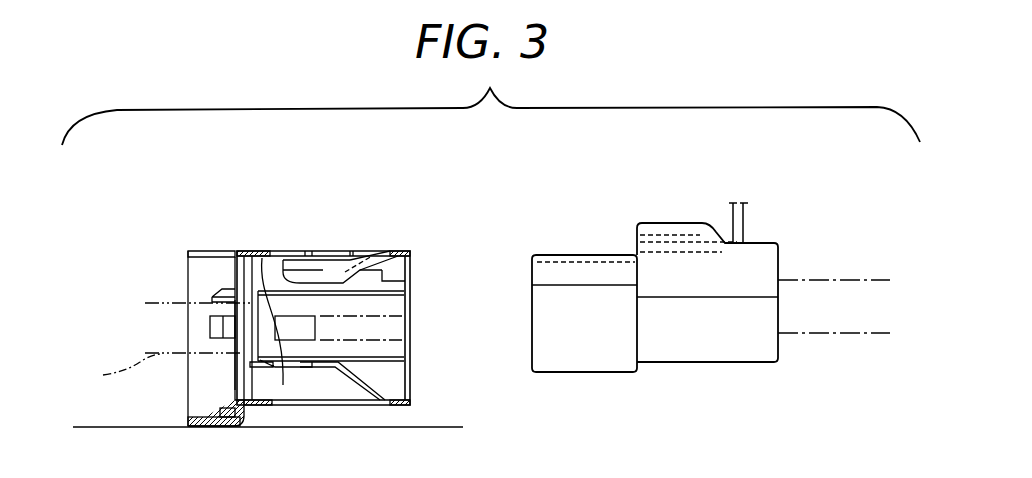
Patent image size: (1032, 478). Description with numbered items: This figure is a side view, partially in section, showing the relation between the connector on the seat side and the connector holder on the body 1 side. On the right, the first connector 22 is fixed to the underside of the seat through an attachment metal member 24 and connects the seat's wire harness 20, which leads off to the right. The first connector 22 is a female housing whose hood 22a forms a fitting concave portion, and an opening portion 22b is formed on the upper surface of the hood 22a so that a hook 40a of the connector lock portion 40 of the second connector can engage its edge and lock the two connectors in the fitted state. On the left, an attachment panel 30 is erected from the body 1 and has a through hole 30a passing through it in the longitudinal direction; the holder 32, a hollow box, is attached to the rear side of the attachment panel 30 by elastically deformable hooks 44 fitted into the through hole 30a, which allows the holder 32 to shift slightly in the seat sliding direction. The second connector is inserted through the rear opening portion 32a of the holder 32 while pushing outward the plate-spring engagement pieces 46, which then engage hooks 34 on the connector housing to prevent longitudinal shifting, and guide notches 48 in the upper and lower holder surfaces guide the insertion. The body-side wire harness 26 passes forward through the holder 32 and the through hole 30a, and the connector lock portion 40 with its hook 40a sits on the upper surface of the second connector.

The body 1 is at (440, 424).
The wire harness 20 is at (853, 337).
The first connector 22 is at (714, 338).
The hood 22a is at (578, 358).
The opening portion 22b is at (594, 262).
The attachment metal member 24 is at (748, 222).
The wire harness 26 is at (126, 379).
The attachment panel 30 is at (203, 257).
The through hole 30a is at (233, 385).
The holder 32 is at (405, 242).
The opening portion 32a is at (412, 265).
The hooks 34 is at (264, 252).
The connector lock portion 40 is at (320, 256).
The hook 40a is at (352, 256).
The hooks 44 is at (232, 368).
The engagement pieces 46 is at (373, 256).
The guide notches 48 is at (283, 250).